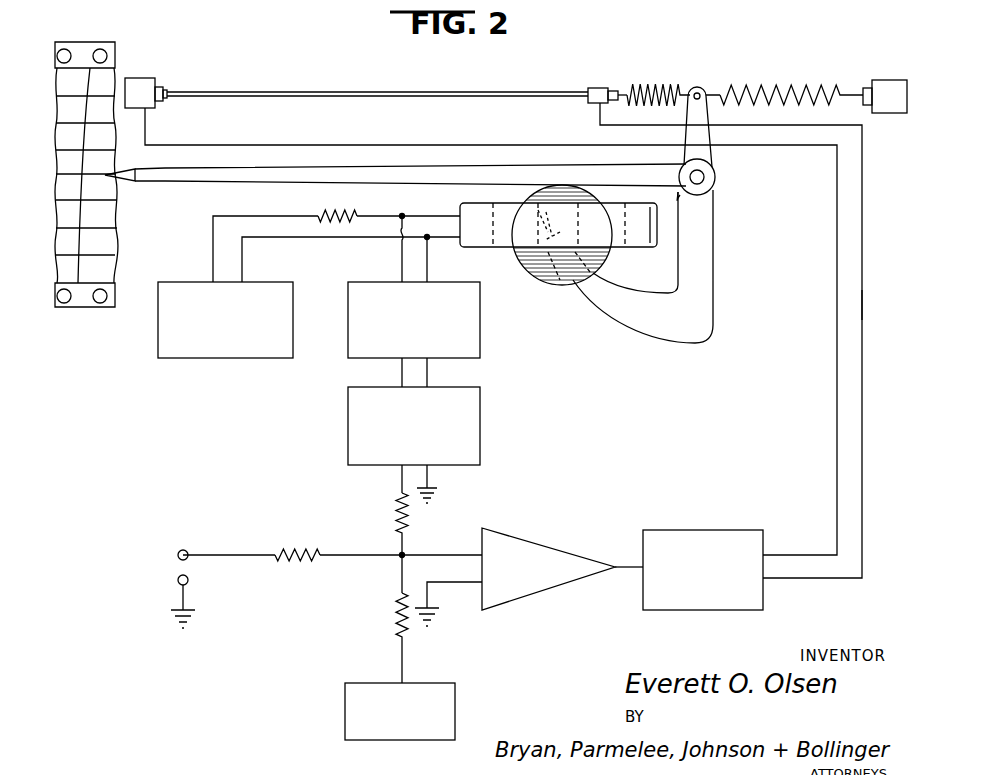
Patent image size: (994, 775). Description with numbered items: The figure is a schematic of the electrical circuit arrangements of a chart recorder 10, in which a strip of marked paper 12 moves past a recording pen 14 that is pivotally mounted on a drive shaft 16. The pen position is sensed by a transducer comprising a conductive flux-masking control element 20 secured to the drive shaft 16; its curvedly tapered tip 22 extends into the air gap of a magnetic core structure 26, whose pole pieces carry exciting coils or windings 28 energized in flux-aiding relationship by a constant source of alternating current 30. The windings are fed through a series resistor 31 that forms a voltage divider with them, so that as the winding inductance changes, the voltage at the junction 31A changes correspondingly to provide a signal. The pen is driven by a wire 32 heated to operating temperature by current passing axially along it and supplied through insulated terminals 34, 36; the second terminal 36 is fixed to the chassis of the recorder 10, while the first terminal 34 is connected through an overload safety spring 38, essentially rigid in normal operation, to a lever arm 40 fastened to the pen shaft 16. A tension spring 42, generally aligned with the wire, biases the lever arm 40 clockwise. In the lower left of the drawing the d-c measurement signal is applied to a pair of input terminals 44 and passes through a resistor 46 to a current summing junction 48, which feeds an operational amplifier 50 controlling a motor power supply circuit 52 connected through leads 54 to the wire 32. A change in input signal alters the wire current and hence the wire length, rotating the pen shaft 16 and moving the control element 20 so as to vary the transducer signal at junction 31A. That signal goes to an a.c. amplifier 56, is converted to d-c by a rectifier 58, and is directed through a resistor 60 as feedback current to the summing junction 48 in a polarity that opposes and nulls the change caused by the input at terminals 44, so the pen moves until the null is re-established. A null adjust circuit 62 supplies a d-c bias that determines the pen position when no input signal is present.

The chart recorder 10 is at (156, 674).
The strip of marked paper 12 is at (66, 135).
The recording pen 14 is at (120, 182).
The drive shaft 16 is at (716, 178).
The conductive flux-masking control element 20 is at (677, 325).
The curvedly tapered tip 22 is at (556, 232).
The magnetic core structure 26 is at (476, 232).
The exciting coils or windings 28 is at (542, 264).
The constant source of alternating current 30 is at (176, 282).
The series resistor 31 is at (320, 214).
The junction 31A is at (403, 214).
The wire 32 is at (274, 93).
The first terminal 34 is at (598, 87).
The second terminal 36 is at (139, 84).
The overload safety spring 38 is at (640, 82).
The lever arm 40 is at (697, 88).
The tension spring 42 is at (768, 88).
The input terminals 44 is at (178, 580).
The resistor 46 is at (290, 550).
The current summing junction 48 is at (400, 558).
The operational amplifier 50 is at (524, 542).
The motor power supply circuit 52 is at (740, 530).
The leads 54 is at (862, 305).
The a.c. amplifier 56 is at (358, 282).
The rectifier 58 is at (348, 403).
The resistor 60 is at (398, 503).
The null adjust circuit 62 is at (350, 683).